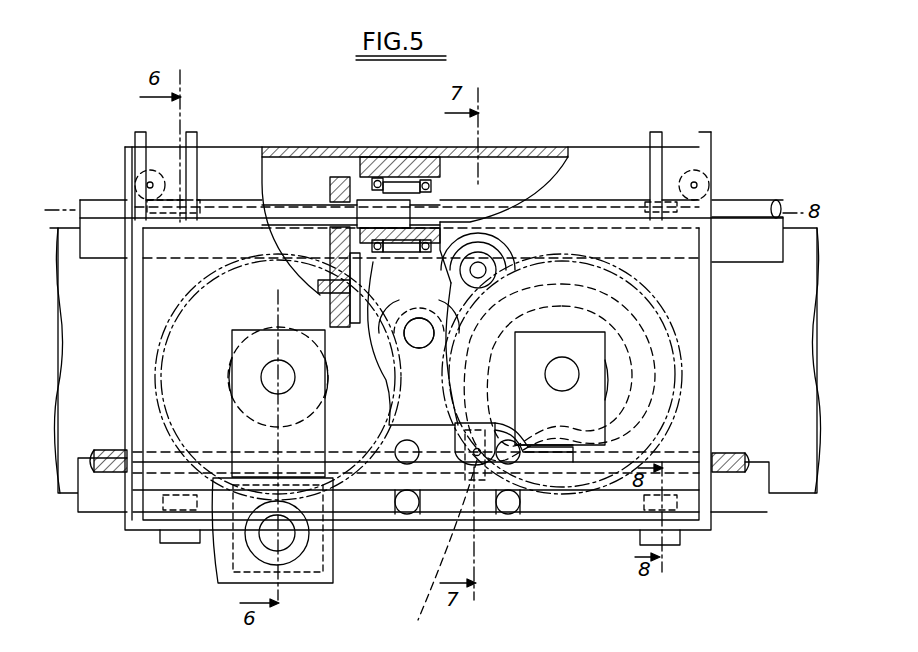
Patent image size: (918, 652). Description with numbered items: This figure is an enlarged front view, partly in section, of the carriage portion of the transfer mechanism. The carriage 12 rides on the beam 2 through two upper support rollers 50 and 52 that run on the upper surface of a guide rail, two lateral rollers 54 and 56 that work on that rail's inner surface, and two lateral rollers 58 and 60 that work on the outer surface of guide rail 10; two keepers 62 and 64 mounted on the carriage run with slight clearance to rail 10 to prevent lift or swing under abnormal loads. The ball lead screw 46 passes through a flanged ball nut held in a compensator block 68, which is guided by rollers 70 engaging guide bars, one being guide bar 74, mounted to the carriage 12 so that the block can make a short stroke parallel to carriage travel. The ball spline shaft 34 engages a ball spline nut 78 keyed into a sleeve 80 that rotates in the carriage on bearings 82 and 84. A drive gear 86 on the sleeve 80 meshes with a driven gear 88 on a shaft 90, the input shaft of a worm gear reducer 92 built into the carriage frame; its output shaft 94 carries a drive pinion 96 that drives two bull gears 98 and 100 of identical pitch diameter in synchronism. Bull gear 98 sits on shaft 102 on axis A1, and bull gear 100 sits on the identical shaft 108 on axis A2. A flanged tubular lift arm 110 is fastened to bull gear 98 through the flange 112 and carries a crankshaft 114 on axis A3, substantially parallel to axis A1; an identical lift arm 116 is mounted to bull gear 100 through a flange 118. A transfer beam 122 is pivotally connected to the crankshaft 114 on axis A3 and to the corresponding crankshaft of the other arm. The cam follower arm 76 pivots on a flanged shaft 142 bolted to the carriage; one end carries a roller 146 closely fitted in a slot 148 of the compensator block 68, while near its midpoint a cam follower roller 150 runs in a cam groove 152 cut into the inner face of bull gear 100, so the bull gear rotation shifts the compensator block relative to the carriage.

The beam 2 is at (804, 312).
The guide rail 10 is at (760, 507).
The carriage 12 is at (707, 133).
The ball spline shaft 34 is at (755, 210).
The ball lead screw 46 is at (735, 475).
The upper support roller 50 is at (140, 181).
The upper support roller 52 is at (705, 168).
The lateral roller 54 is at (135, 206).
The lateral roller 56 is at (650, 210).
The lateral roller 58 is at (157, 512).
The lateral roller 60 is at (644, 500).
The keeper 62 is at (167, 543).
The keeper 64 is at (670, 547).
The compensator block 68 is at (483, 514).
The rollers 70 is at (412, 466).
The guide bar 74 is at (366, 487).
The cam follower arm 76 is at (530, 452).
The ball spline nut 78 is at (391, 204).
The sleeve 80 is at (374, 178).
The bearing 82 is at (381, 210).
The bearing 84 is at (431, 184).
The drive gear 86 is at (307, 170).
The driven gear 88 is at (330, 262).
The shaft 90 is at (318, 290).
The worm gear reducer 92 is at (402, 301).
The output shaft 94 is at (418, 318).
The drive pinion 96 is at (421, 363).
The bull gear 98 is at (208, 282).
The bull gear 100 is at (662, 307).
The shaft 102 is at (265, 352).
The shaft 108 is at (553, 380).
The lift arm 110 is at (232, 418).
The flange 112 is at (232, 362).
The crankshaft 114 is at (267, 543).
The lift arm 116 is at (605, 440).
The flange 118 is at (585, 380).
The transfer beam 122 is at (308, 597).
The flanged shaft 142 is at (479, 267).
The roller 146 is at (438, 552).
The slot 148 is at (452, 436).
The cam follower roller 150 is at (536, 307).
The cam groove 152 is at (640, 350).
The axis A1 is at (281, 378).
The axis A2 is at (560, 372).
The axis A3 is at (310, 548).